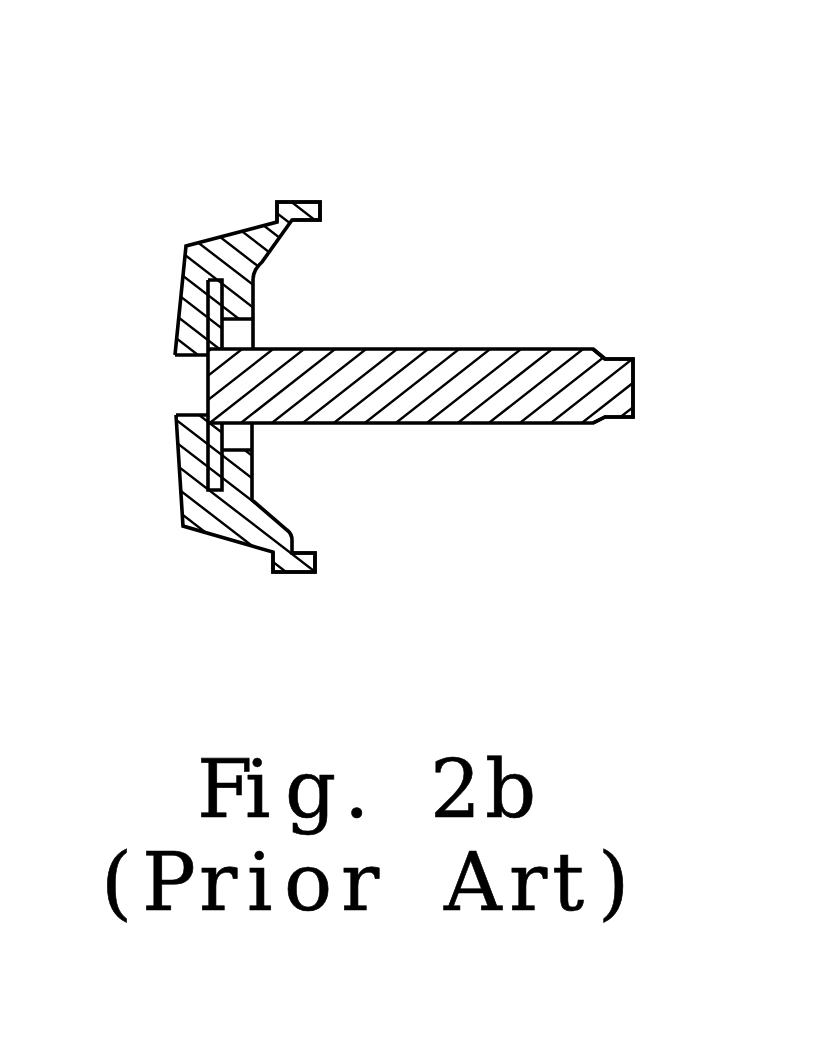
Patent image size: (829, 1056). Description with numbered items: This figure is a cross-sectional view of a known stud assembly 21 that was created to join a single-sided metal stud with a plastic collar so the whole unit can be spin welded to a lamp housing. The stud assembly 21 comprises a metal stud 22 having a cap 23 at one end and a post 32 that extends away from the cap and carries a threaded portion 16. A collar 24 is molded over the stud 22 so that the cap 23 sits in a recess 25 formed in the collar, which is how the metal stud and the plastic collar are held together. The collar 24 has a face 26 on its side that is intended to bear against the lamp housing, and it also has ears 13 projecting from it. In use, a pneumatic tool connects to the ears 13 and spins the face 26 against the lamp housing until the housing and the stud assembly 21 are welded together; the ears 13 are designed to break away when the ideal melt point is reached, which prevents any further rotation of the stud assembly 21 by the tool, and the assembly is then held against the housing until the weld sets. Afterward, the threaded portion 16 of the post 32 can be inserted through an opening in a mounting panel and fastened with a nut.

The stud assembly 21 is at (583, 138).
The metal stud 22 is at (390, 338).
The ears 13 is at (321, 211).
The face 26 is at (182, 287).
The collar 24 is at (240, 542).
The recess 25 is at (247, 334).
The cap 23 is at (207, 380).
The threaded portion 16 is at (534, 424).
The post 32 is at (623, 357).